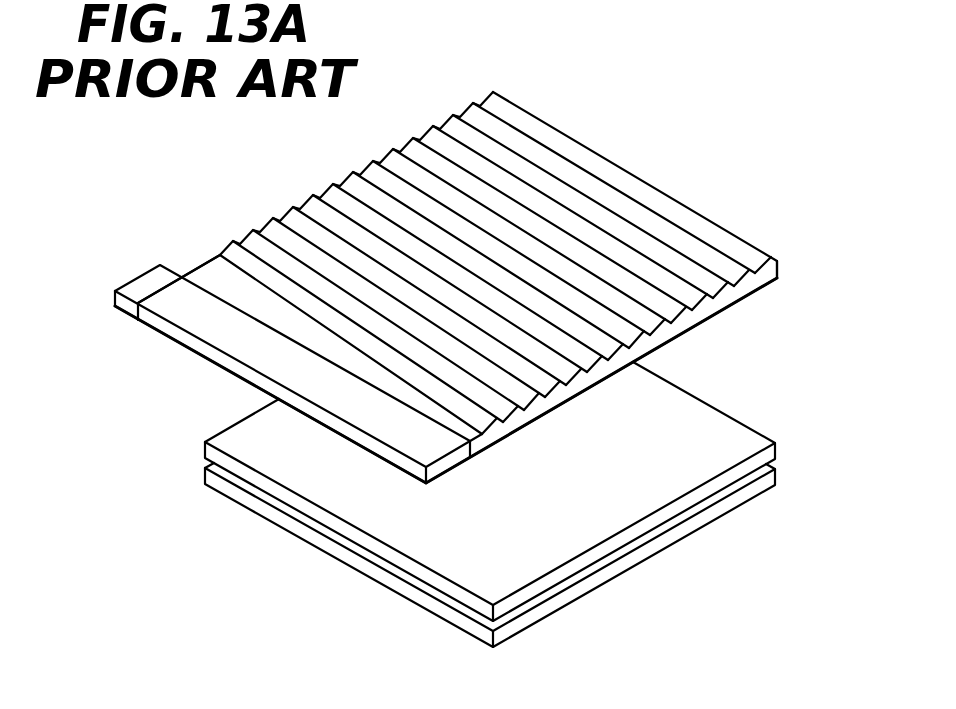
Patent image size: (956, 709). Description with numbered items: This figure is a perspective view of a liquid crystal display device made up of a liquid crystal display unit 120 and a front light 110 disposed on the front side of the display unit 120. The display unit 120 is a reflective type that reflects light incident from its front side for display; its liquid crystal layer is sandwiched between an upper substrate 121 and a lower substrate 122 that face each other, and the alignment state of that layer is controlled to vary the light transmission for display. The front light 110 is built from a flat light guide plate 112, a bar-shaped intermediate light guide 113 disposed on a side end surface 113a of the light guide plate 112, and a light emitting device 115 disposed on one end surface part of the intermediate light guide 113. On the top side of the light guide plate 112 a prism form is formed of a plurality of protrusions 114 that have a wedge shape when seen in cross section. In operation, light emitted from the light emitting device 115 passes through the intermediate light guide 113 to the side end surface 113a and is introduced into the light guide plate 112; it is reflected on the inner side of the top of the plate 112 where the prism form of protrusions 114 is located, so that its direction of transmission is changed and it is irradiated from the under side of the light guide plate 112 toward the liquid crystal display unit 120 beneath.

The front light 110 is at (432, 276).
The light guide plate 112 is at (727, 301).
The intermediate light guide 113 is at (180, 297).
The light incident surface of base substrate 113a is at (236, 367).
The protrusions 114 is at (365, 205).
The light emitting device 115 is at (126, 305).
The liquid crystal display unit 120 is at (490, 516).
The upper substrate 121 is at (313, 512).
The lower substrate 122 is at (338, 549).